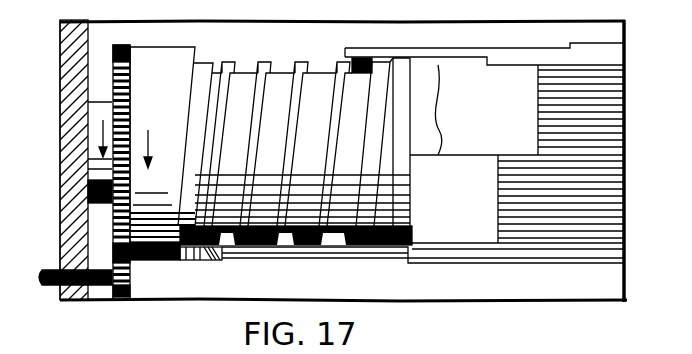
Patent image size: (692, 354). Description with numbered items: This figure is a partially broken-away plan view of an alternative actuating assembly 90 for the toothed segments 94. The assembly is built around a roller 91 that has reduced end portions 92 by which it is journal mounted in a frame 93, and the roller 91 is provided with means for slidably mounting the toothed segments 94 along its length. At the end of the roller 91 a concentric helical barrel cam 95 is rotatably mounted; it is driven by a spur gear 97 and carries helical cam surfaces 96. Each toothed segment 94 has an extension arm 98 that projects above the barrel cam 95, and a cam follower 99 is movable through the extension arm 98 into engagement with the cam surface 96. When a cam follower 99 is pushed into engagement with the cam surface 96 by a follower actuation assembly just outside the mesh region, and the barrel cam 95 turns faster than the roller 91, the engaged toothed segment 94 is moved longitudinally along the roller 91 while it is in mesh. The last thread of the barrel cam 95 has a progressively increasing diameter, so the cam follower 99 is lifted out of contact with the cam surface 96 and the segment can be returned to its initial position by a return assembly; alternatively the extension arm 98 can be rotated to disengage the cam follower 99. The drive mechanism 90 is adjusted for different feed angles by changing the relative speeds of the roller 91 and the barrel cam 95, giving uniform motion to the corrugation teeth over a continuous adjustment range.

The actuating assembly 90 is at (163, 33).
The roller 91 is at (403, 248).
The reduced end portions 92 is at (97, 108).
The frame 93 is at (68, 157).
The toothed segments 94 is at (615, 56).
The concentric helical barrel cam 95 is at (248, 68).
The cam surfaces 96 is at (273, 240).
The spur gear 97 is at (118, 302).
The extension arm 98 is at (358, 53).
The cam follower 99 is at (353, 60).